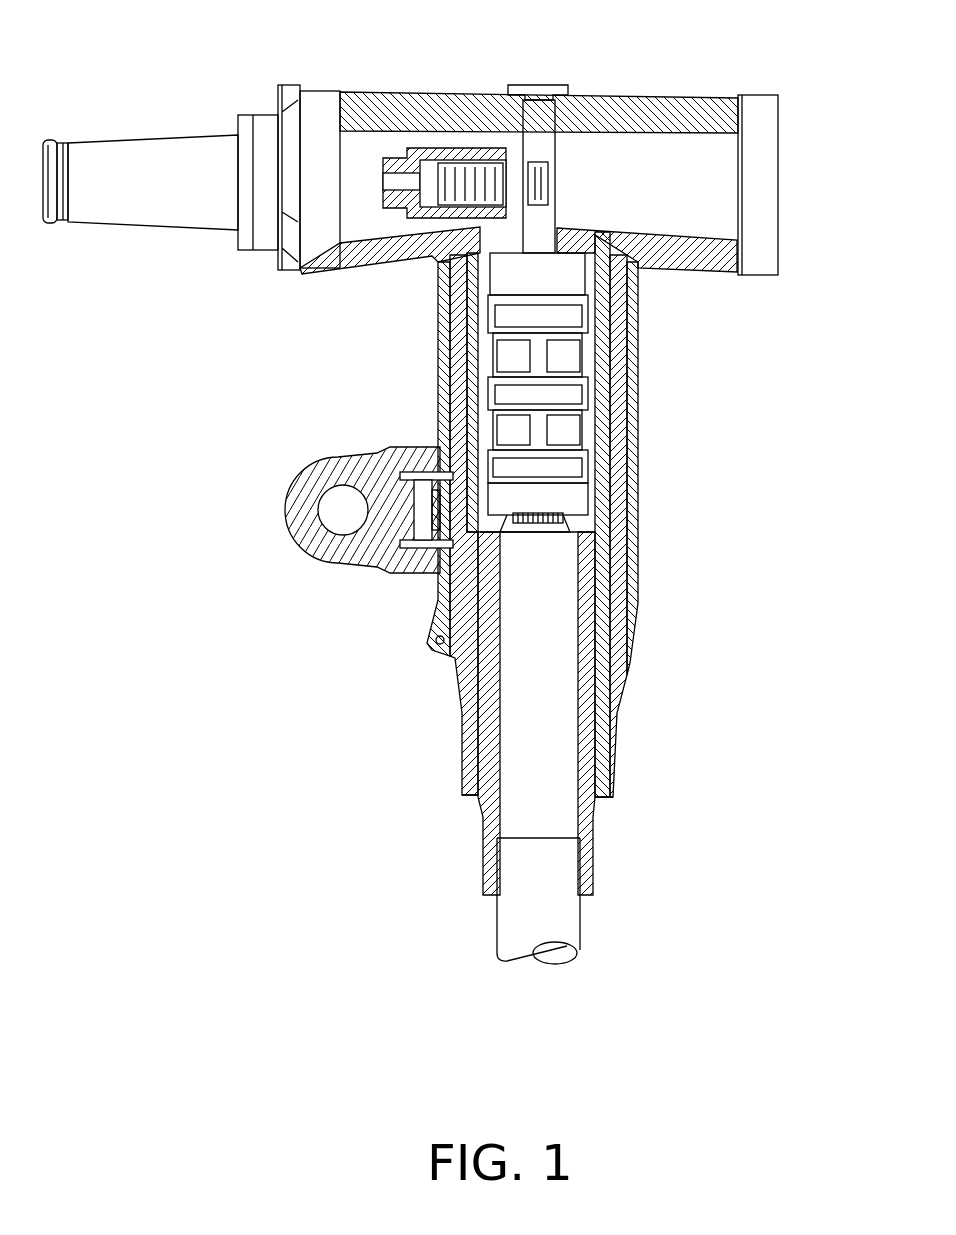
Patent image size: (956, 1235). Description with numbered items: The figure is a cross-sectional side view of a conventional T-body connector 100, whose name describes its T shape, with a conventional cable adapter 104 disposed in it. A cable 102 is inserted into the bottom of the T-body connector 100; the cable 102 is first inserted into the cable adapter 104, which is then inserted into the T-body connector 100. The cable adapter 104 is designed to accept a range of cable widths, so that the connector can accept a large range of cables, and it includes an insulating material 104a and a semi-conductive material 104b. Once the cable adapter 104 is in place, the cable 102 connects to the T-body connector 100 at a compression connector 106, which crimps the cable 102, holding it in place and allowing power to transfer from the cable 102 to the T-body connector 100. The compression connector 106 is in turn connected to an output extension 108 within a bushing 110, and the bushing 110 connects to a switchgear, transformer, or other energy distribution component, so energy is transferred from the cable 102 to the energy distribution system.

The T-body connector 100 is at (426, 488).
The cable 102 is at (547, 713).
The cable adapter 104 is at (552, 748).
The insulating material 104a is at (462, 715).
The semi-conductive material 104b is at (487, 817).
The compression connector 106 is at (525, 398).
The output extension 108 is at (540, 228).
The bushing 110 is at (537, 152).